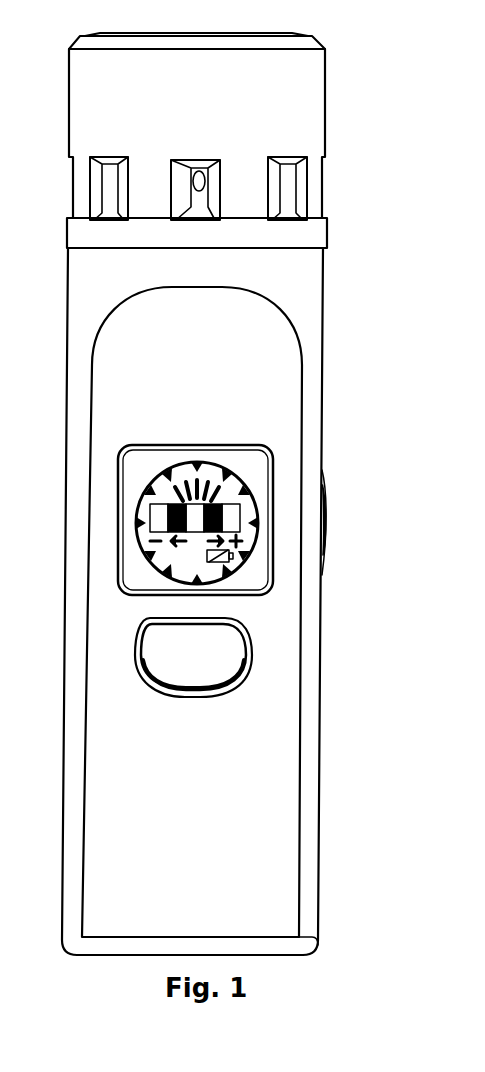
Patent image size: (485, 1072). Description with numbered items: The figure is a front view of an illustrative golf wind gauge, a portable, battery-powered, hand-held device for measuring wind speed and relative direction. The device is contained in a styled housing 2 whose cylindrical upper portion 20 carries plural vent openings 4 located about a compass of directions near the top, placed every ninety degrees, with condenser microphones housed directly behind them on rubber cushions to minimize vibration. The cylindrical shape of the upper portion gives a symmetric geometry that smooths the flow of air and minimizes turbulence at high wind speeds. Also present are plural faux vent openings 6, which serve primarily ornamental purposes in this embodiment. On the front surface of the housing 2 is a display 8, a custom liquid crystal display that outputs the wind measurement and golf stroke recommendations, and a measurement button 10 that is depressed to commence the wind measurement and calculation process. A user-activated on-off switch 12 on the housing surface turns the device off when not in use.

The housing 2 is at (320, 790).
The vent openings 4 is at (194, 157).
The faux vent openings 6 is at (108, 155).
The display 8 is at (165, 445).
The measurement button 10 is at (186, 697).
The on-off switch 12 is at (325, 532).
The cylindrical upper portion 20 is at (325, 88).